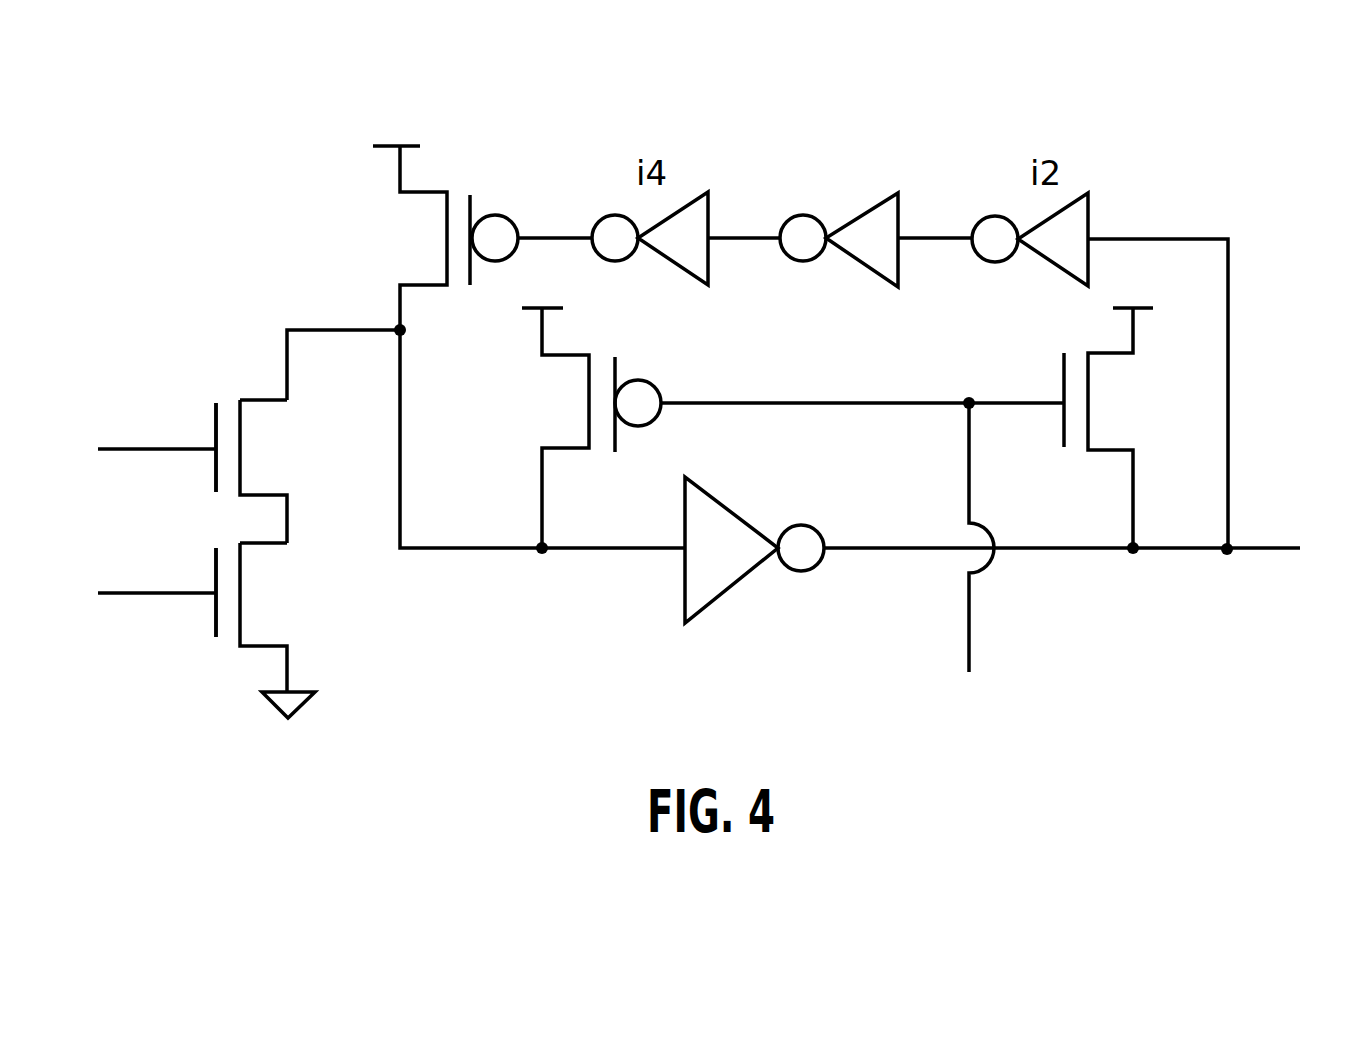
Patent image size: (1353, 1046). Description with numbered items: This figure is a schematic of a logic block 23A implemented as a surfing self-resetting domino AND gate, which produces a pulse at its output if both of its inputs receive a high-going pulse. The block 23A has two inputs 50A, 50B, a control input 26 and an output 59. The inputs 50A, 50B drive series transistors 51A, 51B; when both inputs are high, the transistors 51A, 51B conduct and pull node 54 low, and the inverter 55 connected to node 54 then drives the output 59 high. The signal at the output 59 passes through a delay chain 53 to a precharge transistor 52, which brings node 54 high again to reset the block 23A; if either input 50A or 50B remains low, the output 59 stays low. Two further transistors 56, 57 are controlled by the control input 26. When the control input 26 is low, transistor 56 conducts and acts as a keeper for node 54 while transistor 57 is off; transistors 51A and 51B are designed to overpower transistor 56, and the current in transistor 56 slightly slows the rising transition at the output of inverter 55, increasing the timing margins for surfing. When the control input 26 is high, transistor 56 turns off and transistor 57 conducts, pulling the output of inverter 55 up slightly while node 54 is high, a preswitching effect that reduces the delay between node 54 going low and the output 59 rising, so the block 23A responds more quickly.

The logic block 23A is at (282, 233).
The input 50A is at (155, 448).
The transistor 51A is at (213, 460).
The input 50B is at (143, 592).
The transistor 51B is at (212, 614).
The precharge transistor 52 is at (475, 205).
The delay chain 53 is at (880, 172).
The node 54 is at (545, 553).
The inverter 55 is at (728, 508).
The transistor 56 is at (602, 358).
The transistor 57 is at (1088, 368).
The control input 26 is at (970, 632).
The output 59 is at (1230, 552).